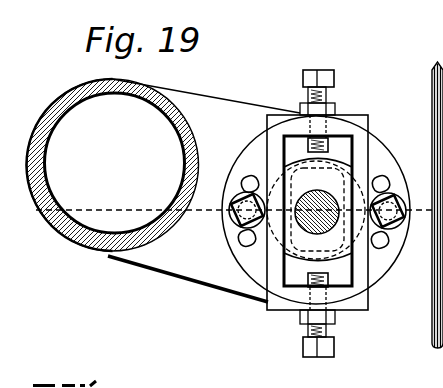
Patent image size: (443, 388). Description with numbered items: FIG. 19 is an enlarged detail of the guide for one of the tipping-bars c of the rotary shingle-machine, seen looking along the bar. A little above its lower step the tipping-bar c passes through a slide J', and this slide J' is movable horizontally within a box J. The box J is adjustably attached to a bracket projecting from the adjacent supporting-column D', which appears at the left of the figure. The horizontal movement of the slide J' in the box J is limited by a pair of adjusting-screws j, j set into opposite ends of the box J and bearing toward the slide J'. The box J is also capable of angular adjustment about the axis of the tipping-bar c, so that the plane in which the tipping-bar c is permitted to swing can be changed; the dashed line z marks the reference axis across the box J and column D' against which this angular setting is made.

The supporting-column D' is at (190, 186).
The axis center line z is at (224, 212).
The box J is at (305, 215).
The adjusting-screw j is at (317, 211).
The slide J' is at (316, 209).
The tipping-bar c is at (316, 220).